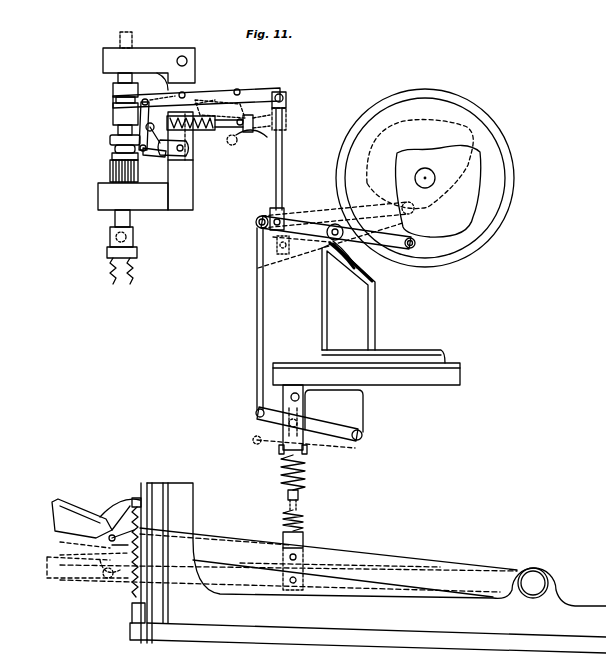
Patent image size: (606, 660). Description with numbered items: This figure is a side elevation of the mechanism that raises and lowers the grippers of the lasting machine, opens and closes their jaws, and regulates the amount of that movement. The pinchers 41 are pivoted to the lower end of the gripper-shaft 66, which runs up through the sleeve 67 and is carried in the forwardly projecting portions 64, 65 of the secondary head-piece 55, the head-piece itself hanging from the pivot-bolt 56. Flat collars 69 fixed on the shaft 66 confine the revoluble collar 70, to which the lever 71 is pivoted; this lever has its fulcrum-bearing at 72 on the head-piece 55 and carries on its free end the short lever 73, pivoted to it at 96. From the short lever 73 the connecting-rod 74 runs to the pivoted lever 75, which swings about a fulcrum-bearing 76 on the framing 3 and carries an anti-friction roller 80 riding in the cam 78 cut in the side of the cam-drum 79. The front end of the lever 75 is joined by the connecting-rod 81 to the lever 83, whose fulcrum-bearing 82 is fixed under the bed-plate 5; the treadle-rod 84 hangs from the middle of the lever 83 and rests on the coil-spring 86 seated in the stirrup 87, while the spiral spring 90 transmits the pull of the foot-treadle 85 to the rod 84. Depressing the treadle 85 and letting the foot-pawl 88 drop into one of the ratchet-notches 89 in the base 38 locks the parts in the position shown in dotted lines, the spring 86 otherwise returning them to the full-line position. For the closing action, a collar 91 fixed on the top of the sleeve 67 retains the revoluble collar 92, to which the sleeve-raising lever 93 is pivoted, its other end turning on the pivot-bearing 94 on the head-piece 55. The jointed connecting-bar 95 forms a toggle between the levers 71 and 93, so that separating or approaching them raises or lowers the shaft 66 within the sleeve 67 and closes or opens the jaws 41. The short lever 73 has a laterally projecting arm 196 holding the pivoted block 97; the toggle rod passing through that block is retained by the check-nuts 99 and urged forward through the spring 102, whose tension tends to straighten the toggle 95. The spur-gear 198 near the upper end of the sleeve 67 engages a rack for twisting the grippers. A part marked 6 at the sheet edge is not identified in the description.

The framing 3 is at (383, 303).
The bed-plate 5 is at (465, 383).
The frame portion 6 is at (600, 10).
The base 38 is at (368, 568).
The pinchers 41 is at (110, 270).
The secondary head-piece 55 is at (180, 161).
The pivot-bolt 56 is at (182, 56).
The upper forwardly-projecting portion 64 is at (149, 61).
The lower forwardly-projecting portion 65 is at (133, 196).
The gripper-shaft 66 is at (133, 77).
The sleeve 67 is at (134, 234).
The flat collars 69 is at (112, 88).
The revoluble collar 70 is at (115, 99).
The lever 71 is at (221, 90).
The fulcrum-bearing 72 is at (184, 92).
The short lever 73 is at (280, 92).
The connecting-rod 74 is at (285, 156).
The pivoted lever 75 is at (312, 217).
The fulcrum-bearing 76 is at (328, 244).
The cam 78 is at (467, 217).
The cam-drum 79 is at (519, 181).
The anti-friction roller 80 is at (422, 247).
The connecting-rod 81 is at (253, 305).
The fulcrum-bearing 82 is at (368, 438).
The lever 83 is at (351, 412).
The treadle-rod 84 is at (304, 498).
The foot-treadle 85 is at (243, 533).
The coil-spring 86 is at (310, 474).
The stirrup 87 is at (308, 408).
The foot-pawl 88 is at (102, 506).
The ratchet-notches 89 is at (126, 591).
The spiral spring 90 is at (309, 527).
The collar 91 is at (109, 139).
The collar 92 is at (113, 148).
The lever 93 is at (154, 156).
The pivot-bearing 94 is at (184, 148).
The jointed connecting-bar 95 is at (153, 125).
The pivot-bearing 96 is at (238, 89).
The pivoted block 97 is at (218, 136).
The check-nuts 99 is at (255, 144).
The spring 102 is at (226, 96).
The laterally-projecting arm 196 is at (244, 142).
The spur-gear 198 is at (109, 172).